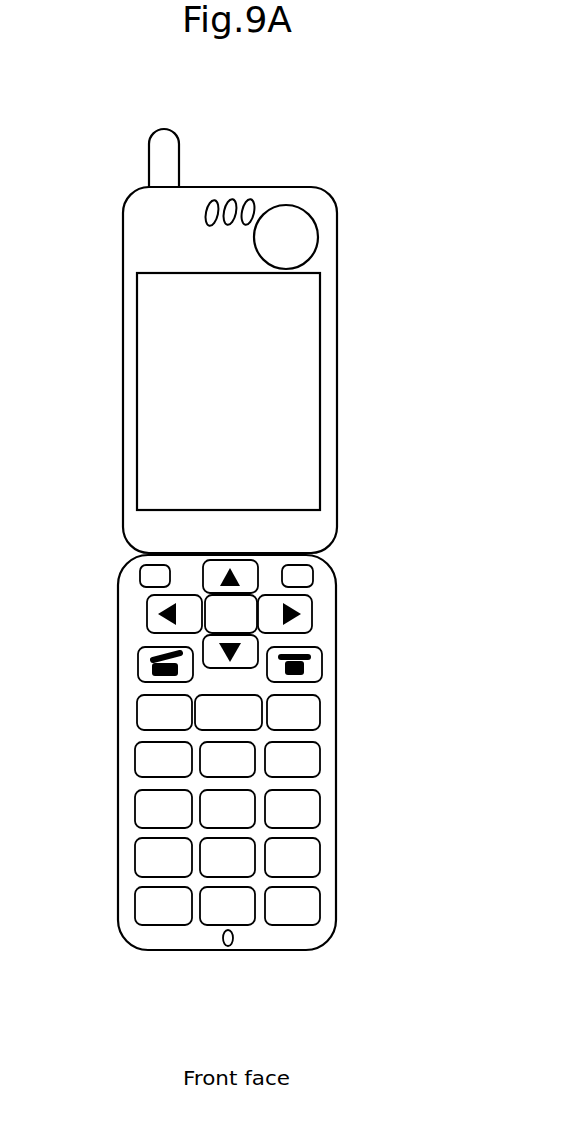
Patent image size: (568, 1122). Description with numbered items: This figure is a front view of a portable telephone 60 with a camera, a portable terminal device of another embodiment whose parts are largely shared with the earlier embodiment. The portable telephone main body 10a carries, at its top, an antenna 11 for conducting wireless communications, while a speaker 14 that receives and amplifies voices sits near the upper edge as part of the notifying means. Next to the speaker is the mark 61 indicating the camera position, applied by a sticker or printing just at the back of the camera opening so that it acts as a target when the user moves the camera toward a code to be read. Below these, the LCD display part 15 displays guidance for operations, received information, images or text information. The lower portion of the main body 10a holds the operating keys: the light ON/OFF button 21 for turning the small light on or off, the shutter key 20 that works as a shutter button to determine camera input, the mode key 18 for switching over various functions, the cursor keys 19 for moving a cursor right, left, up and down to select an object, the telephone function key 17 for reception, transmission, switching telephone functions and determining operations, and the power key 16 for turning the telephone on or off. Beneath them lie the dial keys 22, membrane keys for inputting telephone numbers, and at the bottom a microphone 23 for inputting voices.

The portable telephone with a camera 60 is at (455, 90).
The mark indicating the camera position 61 is at (314, 213).
The antenna 11 is at (178, 134).
The speaker 14 is at (232, 200).
The LCD display part 15 is at (137, 297).
The portable telephone main body 10a is at (327, 325).
The light ON/OFF button 21 is at (142, 575).
The shutter key 20 is at (316, 566).
The mode key 18 is at (236, 613).
The cursor keys 19 is at (305, 616).
The telephone function key 17 is at (148, 658).
The power key 16 is at (307, 650).
The dial keys 22 is at (318, 806).
The microphone 23 is at (230, 946).